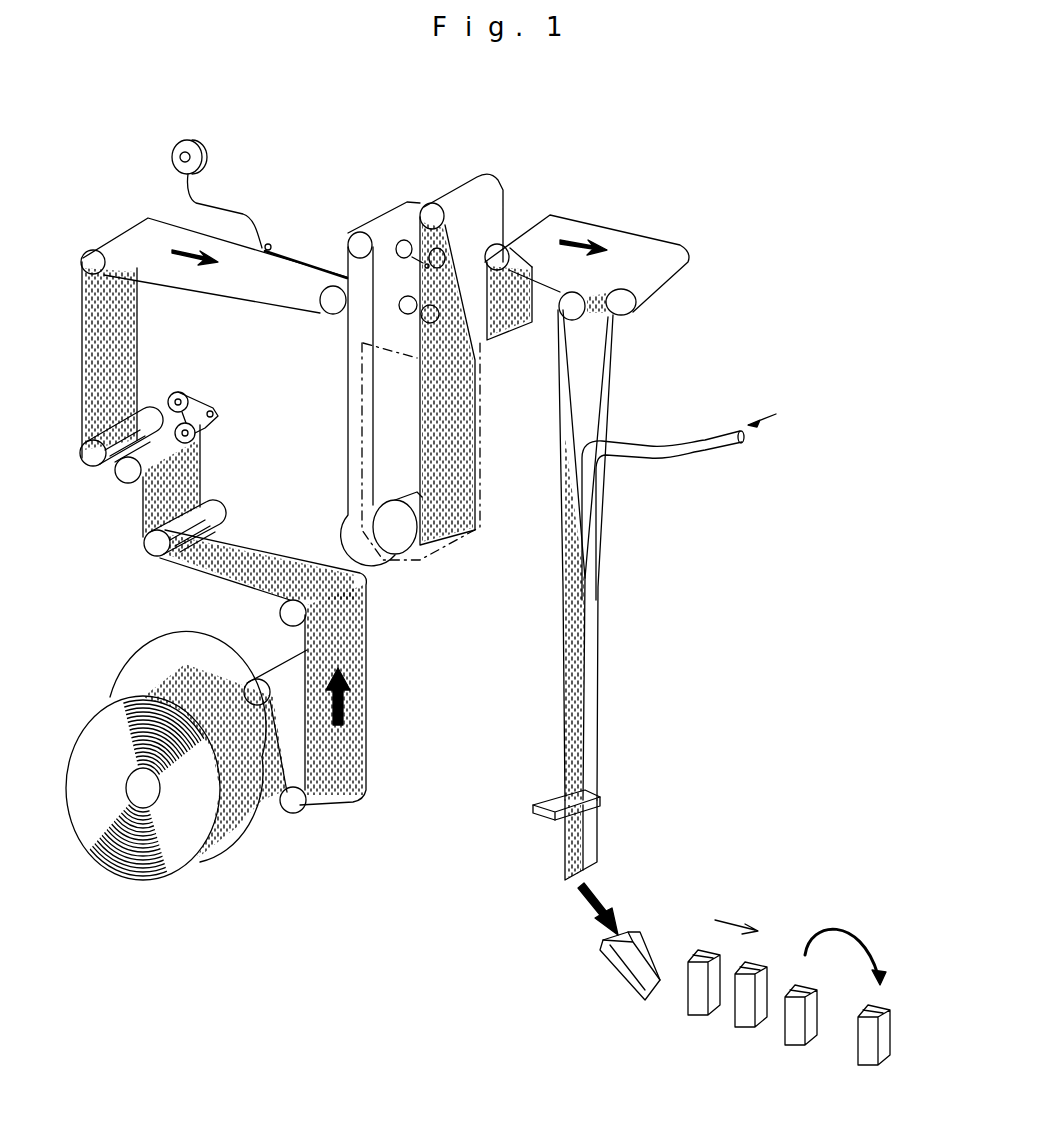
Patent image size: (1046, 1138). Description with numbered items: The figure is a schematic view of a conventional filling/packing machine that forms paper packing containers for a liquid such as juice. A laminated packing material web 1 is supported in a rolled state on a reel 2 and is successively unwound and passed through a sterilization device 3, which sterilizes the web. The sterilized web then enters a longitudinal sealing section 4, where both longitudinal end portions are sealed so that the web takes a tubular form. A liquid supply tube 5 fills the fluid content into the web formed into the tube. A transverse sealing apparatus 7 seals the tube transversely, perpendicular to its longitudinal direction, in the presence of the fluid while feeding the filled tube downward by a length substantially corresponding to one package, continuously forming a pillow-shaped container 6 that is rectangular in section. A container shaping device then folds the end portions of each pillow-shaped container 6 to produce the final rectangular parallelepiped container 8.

The laminated packing material web 1 is at (200, 573).
The reel 2 is at (178, 880).
The sterilization device 3 is at (398, 565).
The longitudinal sealing section 4 is at (622, 644).
The liquid supply tube 5 is at (650, 460).
The pillow-shaped container 6 is at (600, 840).
The transverse sealing apparatus 7 is at (521, 770).
The rectangular parallelepiped container 8 is at (895, 1015).